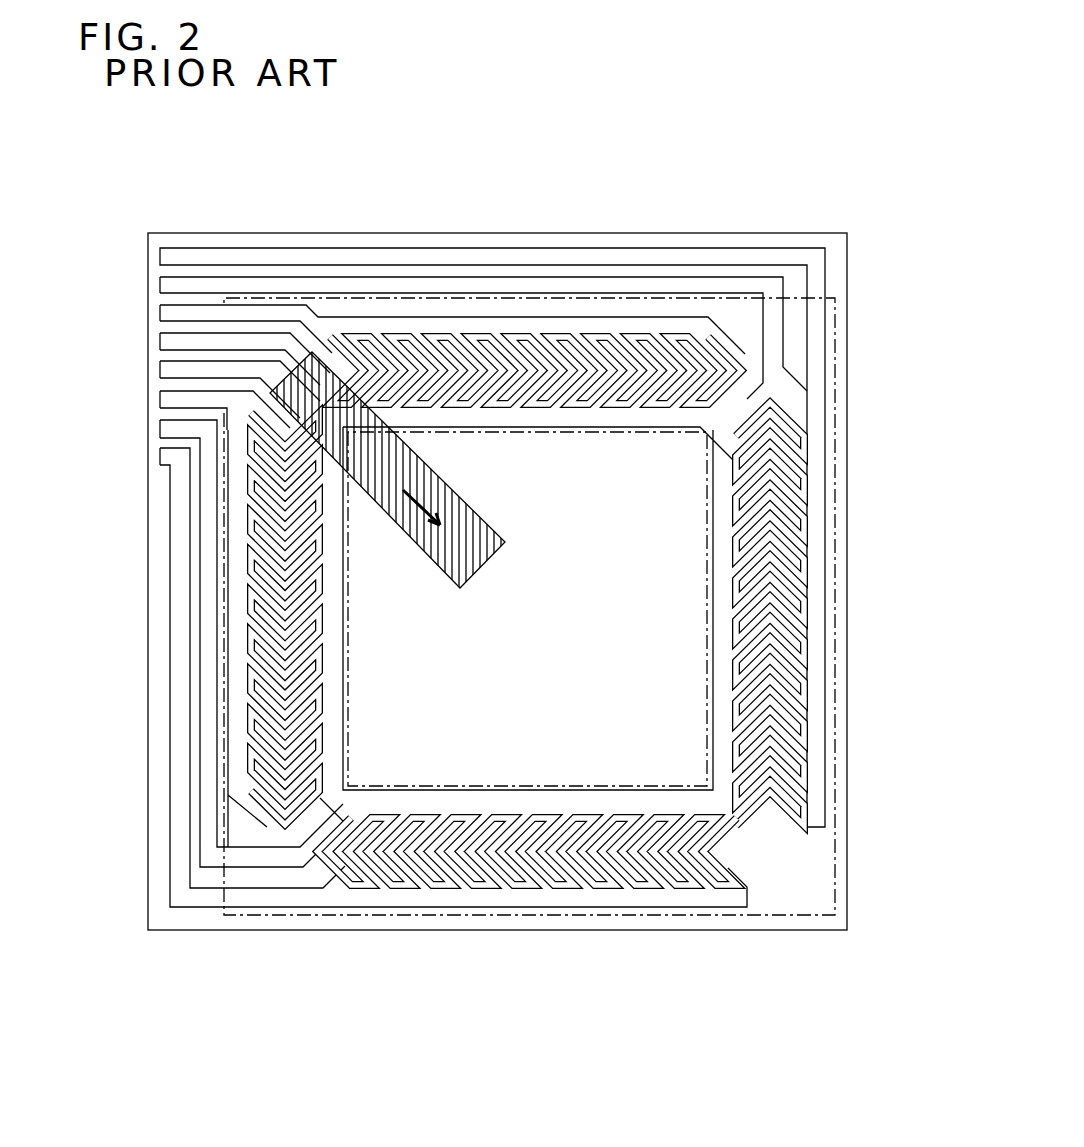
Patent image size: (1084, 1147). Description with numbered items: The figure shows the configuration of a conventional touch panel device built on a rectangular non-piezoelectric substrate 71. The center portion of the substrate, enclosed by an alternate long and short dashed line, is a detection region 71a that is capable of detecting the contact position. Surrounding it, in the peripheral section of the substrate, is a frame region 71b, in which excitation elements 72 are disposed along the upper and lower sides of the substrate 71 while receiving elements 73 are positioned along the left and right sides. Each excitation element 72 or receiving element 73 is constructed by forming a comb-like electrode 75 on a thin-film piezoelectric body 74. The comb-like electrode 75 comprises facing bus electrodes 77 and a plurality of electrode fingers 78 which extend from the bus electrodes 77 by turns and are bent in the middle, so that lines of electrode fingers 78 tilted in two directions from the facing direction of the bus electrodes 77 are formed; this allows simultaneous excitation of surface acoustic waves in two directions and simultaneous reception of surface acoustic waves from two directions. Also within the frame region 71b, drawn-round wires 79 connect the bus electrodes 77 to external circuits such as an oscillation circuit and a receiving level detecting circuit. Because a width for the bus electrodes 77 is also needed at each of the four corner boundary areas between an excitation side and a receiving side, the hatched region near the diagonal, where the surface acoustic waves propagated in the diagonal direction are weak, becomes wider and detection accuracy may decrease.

The non-piezoelectric substrate 71 is at (765, 240).
The detection region 71a is at (618, 434).
The frame region 71b is at (705, 237).
The excitation element 72 is at (582, 300).
The receiving element 73 is at (824, 573).
The piezoelectric body 74 is at (350, 300).
The comb-like electrode 75 is at (500, 320).
The bus electrode 77 is at (420, 325).
The electrode finger 78 is at (650, 360).
The drawn-round wire 79 is at (190, 280).